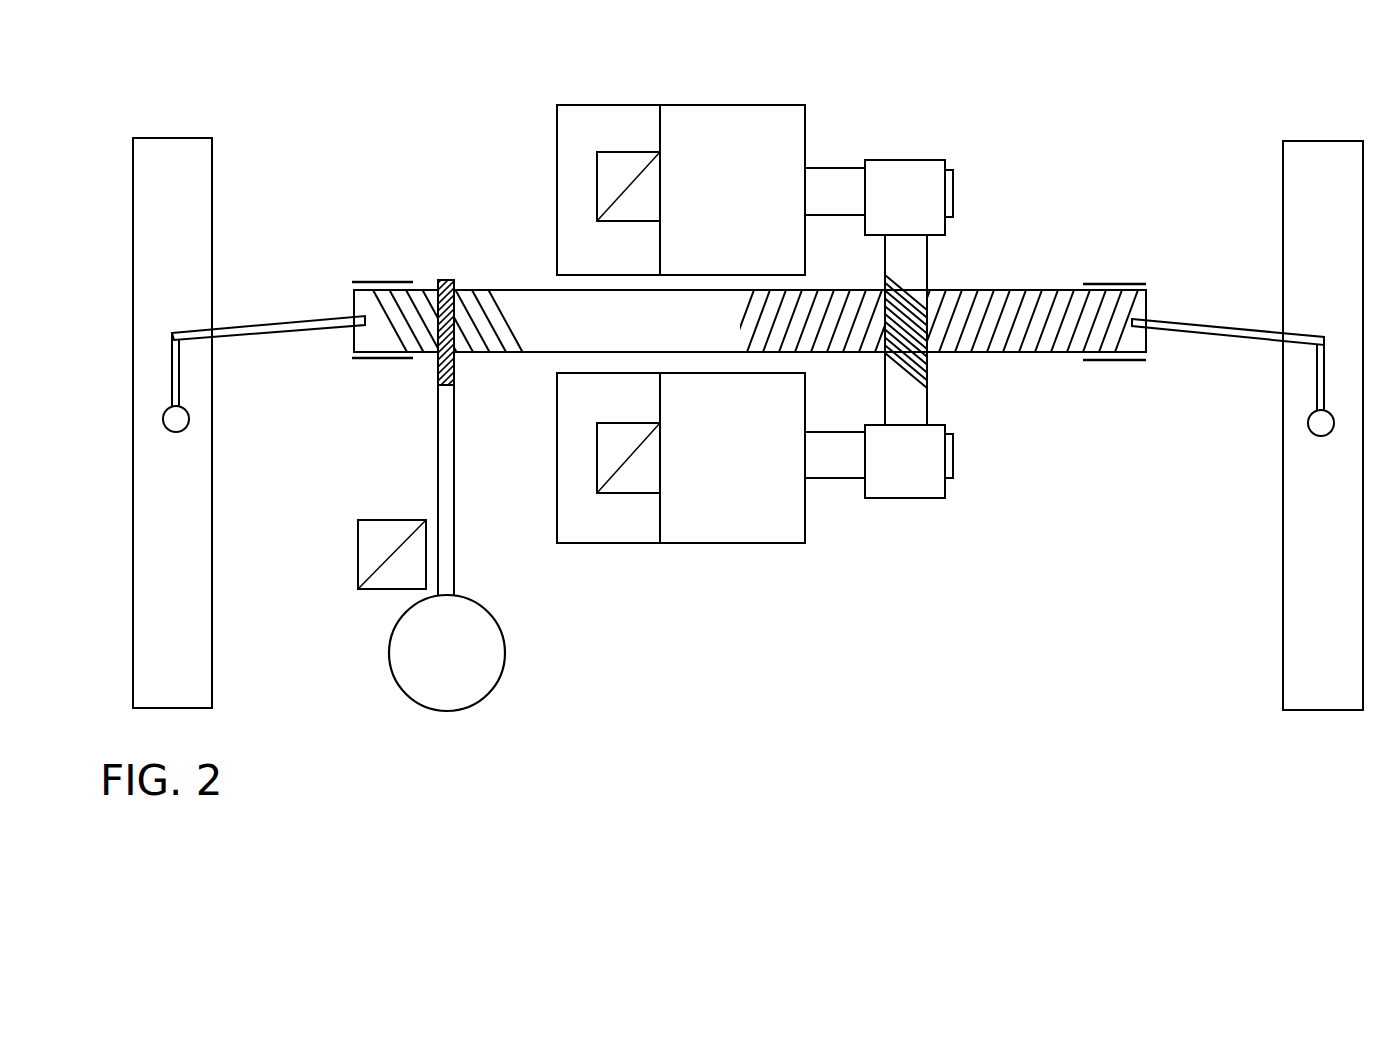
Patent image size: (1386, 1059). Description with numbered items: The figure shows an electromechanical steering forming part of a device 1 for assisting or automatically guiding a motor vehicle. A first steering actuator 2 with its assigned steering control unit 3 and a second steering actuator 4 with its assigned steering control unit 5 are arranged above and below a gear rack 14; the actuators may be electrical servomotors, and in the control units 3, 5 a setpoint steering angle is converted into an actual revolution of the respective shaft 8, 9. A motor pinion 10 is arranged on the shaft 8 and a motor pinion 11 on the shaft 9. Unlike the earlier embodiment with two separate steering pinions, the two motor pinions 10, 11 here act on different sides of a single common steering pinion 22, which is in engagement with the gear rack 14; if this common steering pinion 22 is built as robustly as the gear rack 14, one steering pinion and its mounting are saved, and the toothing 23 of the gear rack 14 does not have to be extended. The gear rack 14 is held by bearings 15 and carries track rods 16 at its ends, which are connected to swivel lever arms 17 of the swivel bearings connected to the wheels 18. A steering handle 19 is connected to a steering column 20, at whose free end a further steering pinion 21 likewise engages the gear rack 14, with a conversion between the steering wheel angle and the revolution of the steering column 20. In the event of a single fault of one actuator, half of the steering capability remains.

The device 1 is at (920, 118).
The first steering actuator 2 is at (743, 122).
The first steering control unit 3 is at (621, 122).
The second steering actuator 4 is at (735, 531).
The second steering control unit 5 is at (606, 531).
The shaft 8 is at (843, 188).
The shaft 9 is at (833, 470).
The motor pinion 10 is at (930, 175).
The motor pinion 11 is at (918, 488).
The gear rack 14 is at (528, 307).
The bearings 15 is at (386, 282).
The track rods 16 is at (293, 320).
The swivel lever arms 17 is at (178, 378).
The wheels 18 is at (183, 492).
The steering handle 19 is at (486, 673).
The steering column 20 is at (446, 439).
The further steering pinion 21 is at (445, 362).
The common steering pinion 22 is at (909, 298).
The toothing 23 is at (1035, 342).